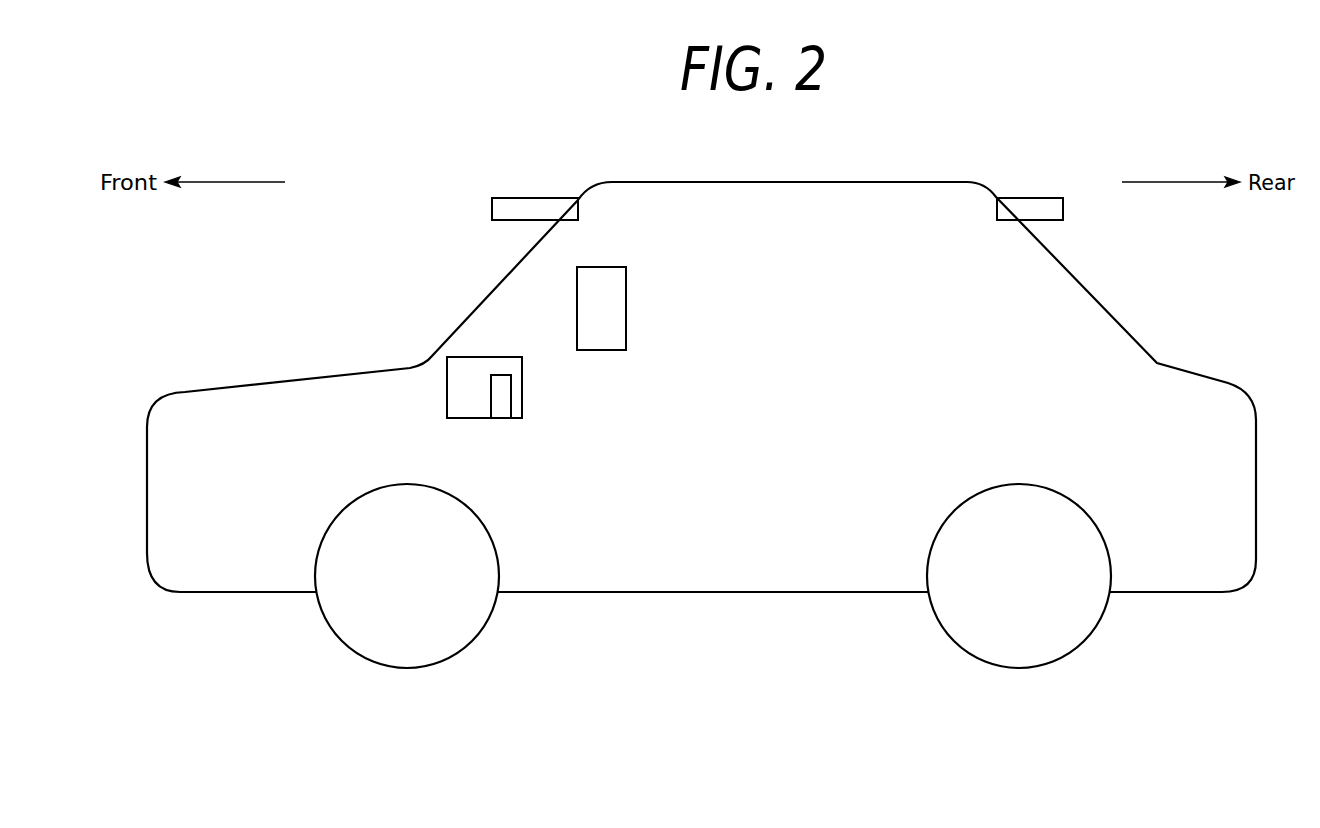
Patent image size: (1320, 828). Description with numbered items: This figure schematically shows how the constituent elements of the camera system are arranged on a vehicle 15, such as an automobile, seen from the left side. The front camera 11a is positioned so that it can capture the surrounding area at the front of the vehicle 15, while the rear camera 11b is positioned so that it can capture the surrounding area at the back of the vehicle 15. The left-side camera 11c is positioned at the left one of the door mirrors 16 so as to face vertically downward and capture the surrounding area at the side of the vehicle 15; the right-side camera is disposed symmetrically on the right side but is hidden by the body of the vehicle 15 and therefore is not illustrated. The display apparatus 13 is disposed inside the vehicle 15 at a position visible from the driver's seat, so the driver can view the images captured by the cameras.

The vehicle 15 is at (293, 381).
The front camera 11a is at (538, 198).
The rear camera 11b is at (1030, 198).
The left-side camera 11c is at (503, 392).
The display apparatus 13 is at (626, 308).
The door mirror 16 is at (447, 389).